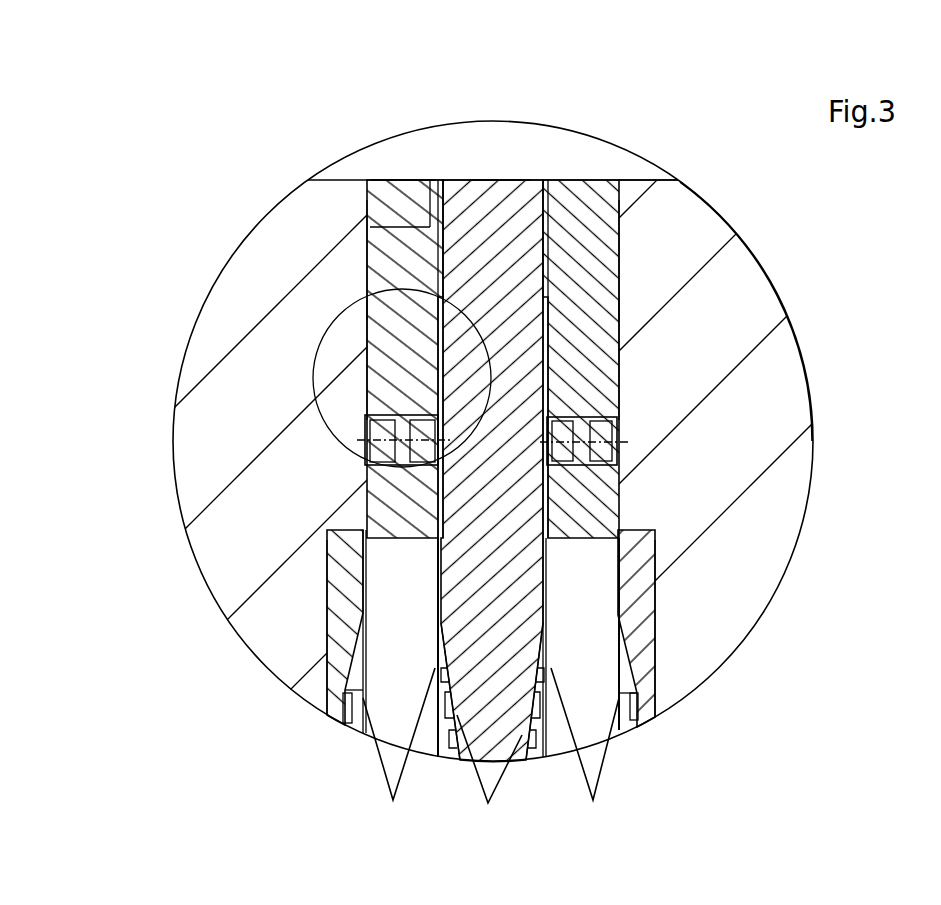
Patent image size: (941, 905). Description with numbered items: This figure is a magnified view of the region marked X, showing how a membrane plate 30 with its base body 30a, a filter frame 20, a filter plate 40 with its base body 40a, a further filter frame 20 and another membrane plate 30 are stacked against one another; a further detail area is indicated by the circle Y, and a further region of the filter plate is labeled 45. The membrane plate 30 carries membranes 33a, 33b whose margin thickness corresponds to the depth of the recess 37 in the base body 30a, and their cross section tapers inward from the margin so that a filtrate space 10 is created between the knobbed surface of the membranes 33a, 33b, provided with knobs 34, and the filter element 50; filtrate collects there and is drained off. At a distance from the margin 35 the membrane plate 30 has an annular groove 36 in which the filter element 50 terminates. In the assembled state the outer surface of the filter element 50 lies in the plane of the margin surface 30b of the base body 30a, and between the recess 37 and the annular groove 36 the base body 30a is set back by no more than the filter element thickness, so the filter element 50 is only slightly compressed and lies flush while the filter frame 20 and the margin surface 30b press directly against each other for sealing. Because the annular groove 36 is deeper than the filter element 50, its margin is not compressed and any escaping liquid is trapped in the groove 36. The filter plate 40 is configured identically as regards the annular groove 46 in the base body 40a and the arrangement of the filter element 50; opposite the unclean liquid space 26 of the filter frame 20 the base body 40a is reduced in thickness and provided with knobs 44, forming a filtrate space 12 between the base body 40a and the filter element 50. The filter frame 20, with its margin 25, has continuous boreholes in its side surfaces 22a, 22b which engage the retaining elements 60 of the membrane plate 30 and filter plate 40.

The filtrate space 10 is at (362, 708).
The filtrate space 12 is at (446, 727).
The filter frame 20 is at (400, 177).
The side surface 22a is at (366, 255).
The side surface 22b is at (622, 262).
The margin 25 is at (423, 178).
The unclean liquid space 26 is at (393, 556).
The membrane plate 30 is at (330, 179).
The base body 30a is at (240, 401).
The margin surface 30b is at (433, 178).
The membrane 33a is at (650, 610).
The membrane 33b is at (336, 633).
The knobs 34 is at (348, 702).
The margin 35 is at (636, 177).
The annular groove 36 is at (362, 315).
The recess 37 is at (320, 573).
The filter plate 40 is at (488, 177).
The base body 40a is at (497, 625).
The knobs 44 is at (488, 804).
The column top face 45 is at (517, 178).
The annular groove 46 is at (443, 297).
The filter element 50 is at (433, 801).
The retaining elements 60 is at (570, 418).
The region X is at (770, 265).
The detail circle Y is at (313, 347).